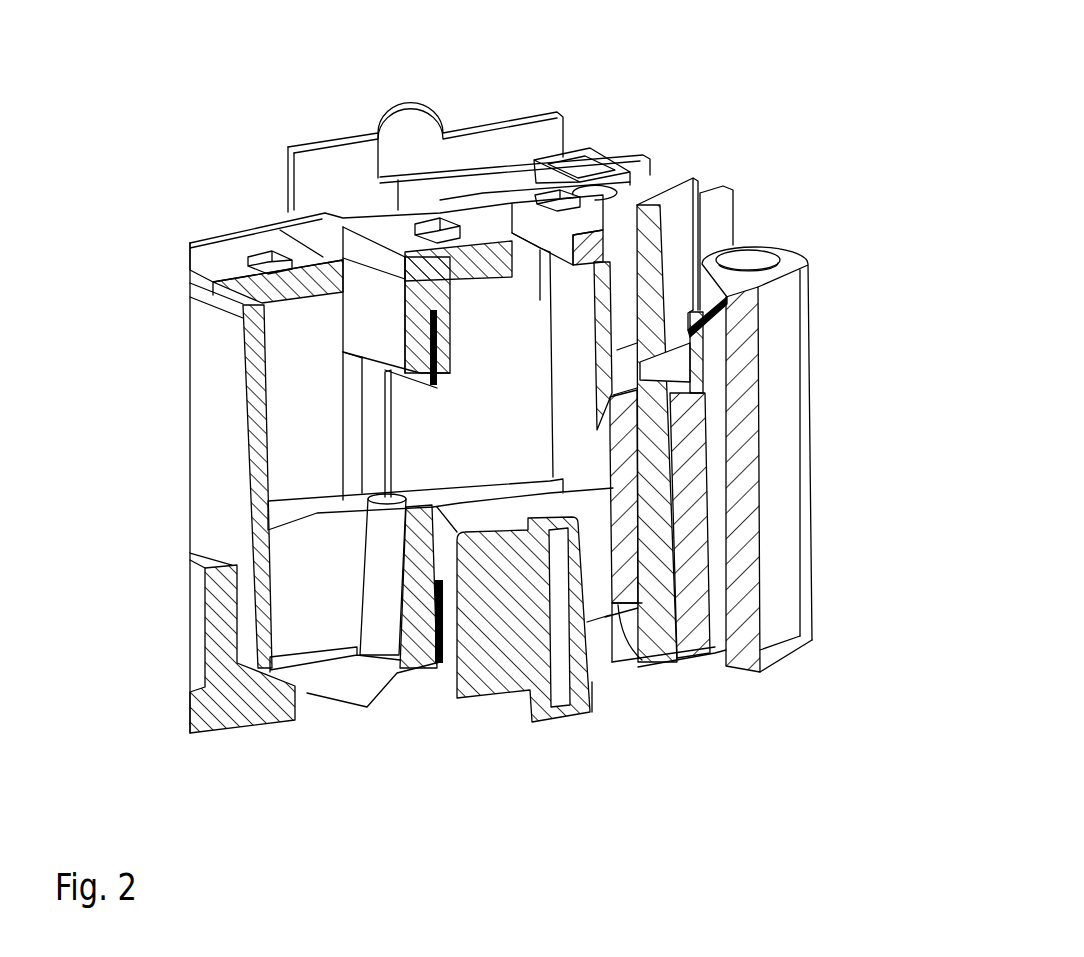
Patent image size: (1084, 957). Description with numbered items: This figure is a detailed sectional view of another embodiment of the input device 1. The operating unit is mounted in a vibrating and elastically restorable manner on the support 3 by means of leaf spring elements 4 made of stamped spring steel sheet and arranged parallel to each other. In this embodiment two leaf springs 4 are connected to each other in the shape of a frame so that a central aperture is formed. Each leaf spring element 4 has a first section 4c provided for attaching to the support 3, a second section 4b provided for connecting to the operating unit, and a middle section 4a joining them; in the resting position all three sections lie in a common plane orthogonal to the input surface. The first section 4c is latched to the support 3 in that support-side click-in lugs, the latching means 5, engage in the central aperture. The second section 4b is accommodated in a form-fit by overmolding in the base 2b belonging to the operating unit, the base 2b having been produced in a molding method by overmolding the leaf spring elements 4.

The input device 1 is at (706, 82).
The base 2b is at (212, 373).
The support 3 is at (312, 640).
The leaf spring element 4 is at (350, 423).
The middle section 4a is at (375, 463).
The second section 4b is at (411, 333).
The first section 4c is at (455, 632).
The latching means 5 is at (390, 600).